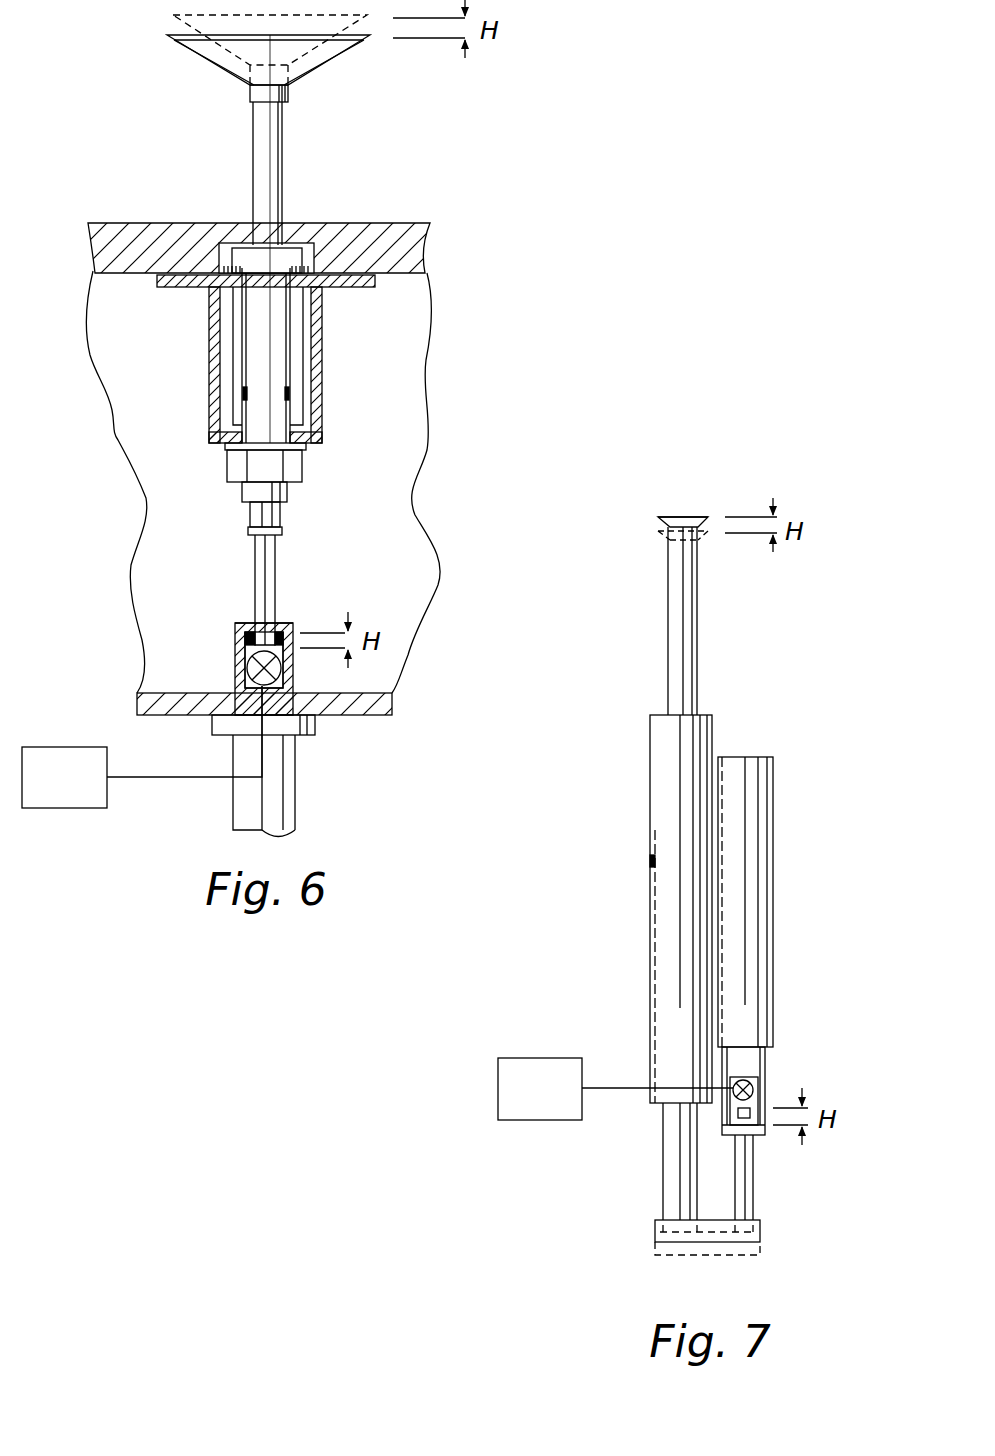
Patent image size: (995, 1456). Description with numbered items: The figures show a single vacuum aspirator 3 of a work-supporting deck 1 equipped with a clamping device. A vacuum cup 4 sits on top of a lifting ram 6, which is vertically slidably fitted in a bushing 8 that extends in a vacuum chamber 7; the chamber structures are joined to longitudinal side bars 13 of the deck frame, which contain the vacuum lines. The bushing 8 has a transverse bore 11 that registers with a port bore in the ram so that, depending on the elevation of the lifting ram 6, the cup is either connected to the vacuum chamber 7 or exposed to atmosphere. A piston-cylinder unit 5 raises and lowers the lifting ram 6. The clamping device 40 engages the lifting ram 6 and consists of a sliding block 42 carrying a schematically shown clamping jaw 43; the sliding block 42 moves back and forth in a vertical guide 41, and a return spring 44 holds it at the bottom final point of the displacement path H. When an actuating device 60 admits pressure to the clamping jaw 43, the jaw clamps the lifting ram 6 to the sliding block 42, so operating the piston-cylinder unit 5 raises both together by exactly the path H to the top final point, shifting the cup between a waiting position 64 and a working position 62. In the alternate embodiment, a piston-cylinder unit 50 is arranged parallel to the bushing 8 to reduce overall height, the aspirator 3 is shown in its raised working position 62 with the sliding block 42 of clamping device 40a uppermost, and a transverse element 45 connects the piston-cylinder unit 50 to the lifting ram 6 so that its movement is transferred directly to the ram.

In FIG. 6, the work-supporting deck 1 is at (385, 232).
In FIG. 6, the vacuum aspirator 3 is at (126, 321).
In FIG. 7, the vacuum aspirator 3 is at (634, 741).
In FIG. 6, the vacuum cup 4 is at (207, 56).
In FIG. 7, the vacuum cup 4 is at (675, 517).
In FIG. 6, the piston-cylinder unit 5 is at (248, 797).
In FIG. 6, the lifting ram 6 is at (265, 152).
In FIG. 7, the lifting ram 6 is at (690, 600).
In FIG. 6, the vacuum chamber 7 is at (298, 393).
In FIG. 6, the bushing 8 is at (278, 317).
In FIG. 7, the bushing 8 is at (667, 905).
In FIG. 6, the transverse bore 11 is at (240, 395).
In FIG. 7, the transverse bore 11 is at (650, 860).
In FIG. 6, the longitudinal side bar 13 is at (405, 300).
In FIG. 6, the clamping device 40 is at (301, 692).
In FIG. 7, the clamping device 40a is at (792, 1079).
In FIG. 6, the vertical guide 41 is at (243, 632).
In FIG. 6, the sliding block 42 is at (272, 655).
In FIG. 7, the sliding block 42 is at (763, 1080).
In FIG. 6, the clamping jaw 43 is at (242, 680).
In FIG. 6, the return spring 44 is at (290, 625).
In FIG. 7, the transverse element 45 is at (715, 1235).
In FIG. 7, the piston-cylinder unit 50 is at (760, 893).
In FIG. 6, the actuating device 60 is at (50, 792).
In FIG. 7, the actuating device 60 is at (525, 1102).
In FIG. 6, the working position 62 is at (173, 18).
In FIG. 7, the working position 62 is at (658, 520).
In FIG. 6, the waiting position 64 is at (178, 42).
In FIG. 7, the waiting position 64 is at (662, 535).